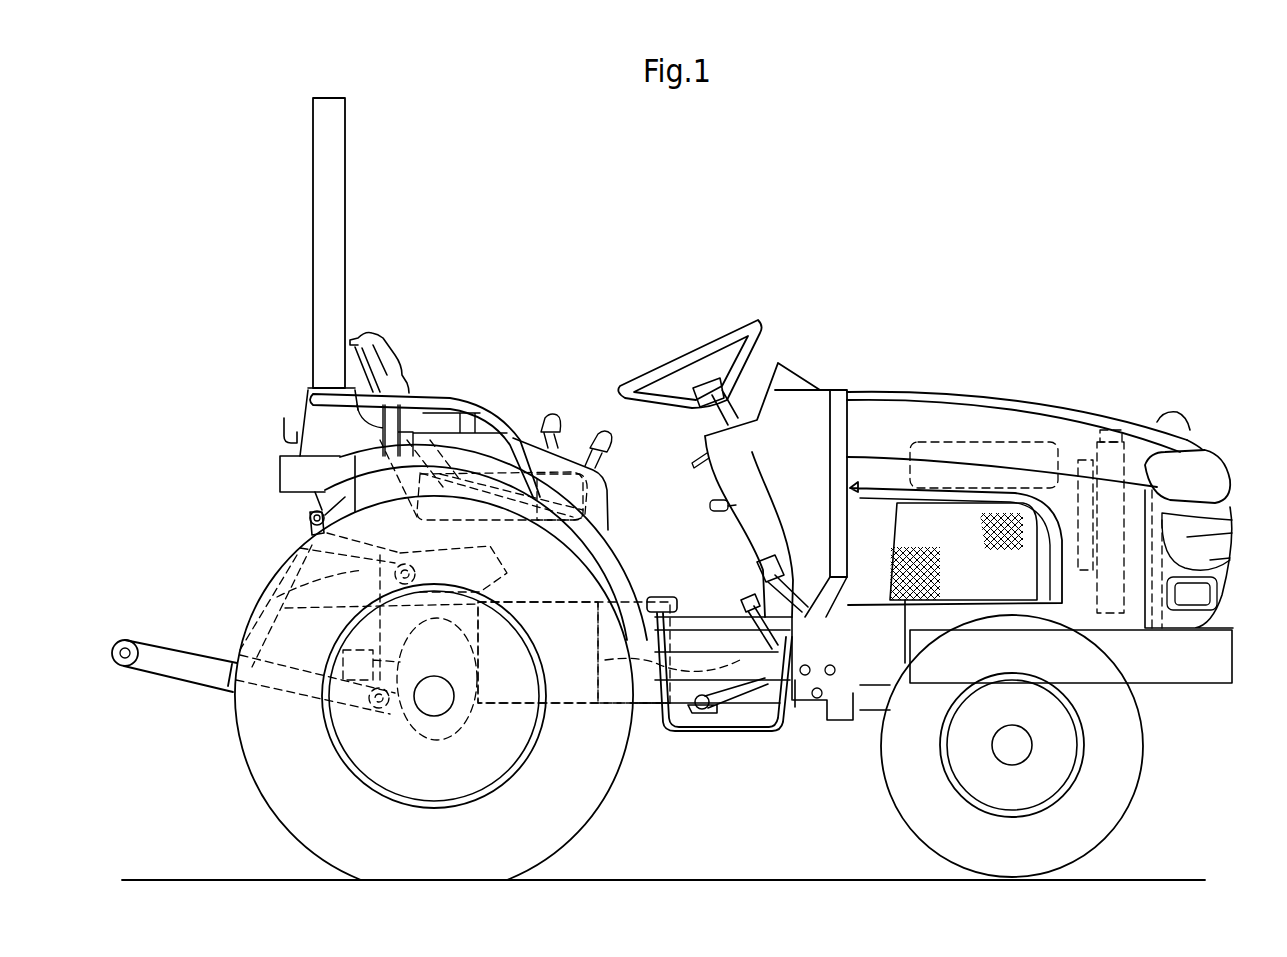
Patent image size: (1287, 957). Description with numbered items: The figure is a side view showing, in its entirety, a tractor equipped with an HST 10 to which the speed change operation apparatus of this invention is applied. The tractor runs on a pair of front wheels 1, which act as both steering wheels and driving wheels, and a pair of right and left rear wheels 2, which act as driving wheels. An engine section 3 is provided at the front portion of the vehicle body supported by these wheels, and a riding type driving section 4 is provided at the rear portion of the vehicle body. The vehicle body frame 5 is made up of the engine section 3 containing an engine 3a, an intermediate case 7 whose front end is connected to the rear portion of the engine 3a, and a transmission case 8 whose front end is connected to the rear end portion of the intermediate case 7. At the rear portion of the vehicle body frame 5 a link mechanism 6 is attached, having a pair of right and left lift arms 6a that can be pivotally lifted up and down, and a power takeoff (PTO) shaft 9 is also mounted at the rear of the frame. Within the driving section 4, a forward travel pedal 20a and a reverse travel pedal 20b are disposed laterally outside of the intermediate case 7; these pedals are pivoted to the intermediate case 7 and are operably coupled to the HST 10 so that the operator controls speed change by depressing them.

The front wheels 1 is at (1136, 791).
The rear wheels 2 is at (257, 781).
The engine section 3 is at (1067, 397).
The engine 3a is at (995, 440).
The riding type driving section 4 is at (584, 337).
The vehicle body frame 5 is at (740, 713).
The link mechanism 6 is at (191, 695).
The lift arms 6a is at (300, 549).
The intermediate case 7 is at (762, 700).
The transmission case 8 is at (563, 705).
The power takeoff (PTO) shaft 9 is at (343, 650).
The HST 10 is at (643, 707).
The forward travel pedal 20a is at (745, 600).
The reverse travel pedal 20b is at (655, 600).